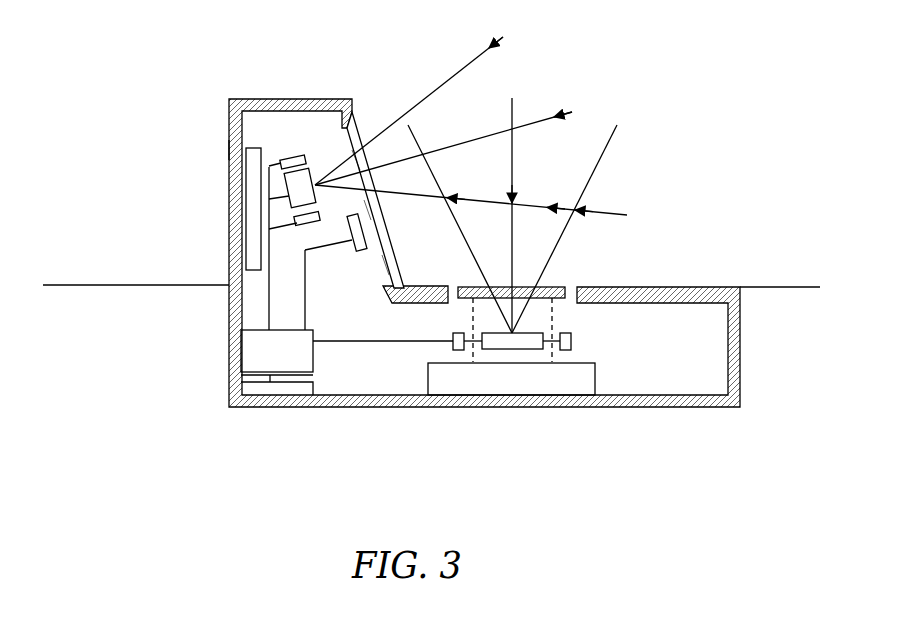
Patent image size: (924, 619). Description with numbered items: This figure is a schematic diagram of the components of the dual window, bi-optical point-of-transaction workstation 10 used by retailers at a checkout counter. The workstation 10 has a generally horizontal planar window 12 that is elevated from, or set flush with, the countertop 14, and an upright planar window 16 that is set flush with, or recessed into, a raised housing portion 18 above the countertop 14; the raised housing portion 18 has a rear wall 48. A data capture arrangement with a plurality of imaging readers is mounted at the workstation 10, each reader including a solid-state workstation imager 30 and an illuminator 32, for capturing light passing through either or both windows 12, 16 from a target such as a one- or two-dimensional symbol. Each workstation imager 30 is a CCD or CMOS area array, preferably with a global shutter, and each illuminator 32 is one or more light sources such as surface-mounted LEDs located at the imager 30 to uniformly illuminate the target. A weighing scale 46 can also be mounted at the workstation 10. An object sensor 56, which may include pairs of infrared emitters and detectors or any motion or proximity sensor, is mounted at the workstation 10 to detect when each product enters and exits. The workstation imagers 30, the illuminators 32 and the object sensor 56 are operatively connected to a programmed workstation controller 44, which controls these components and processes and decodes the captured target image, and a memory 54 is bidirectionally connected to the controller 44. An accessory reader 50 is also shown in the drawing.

The point-of-transaction workstation 10 is at (677, 238).
The horizontal planar window 12 is at (552, 282).
The countertop 14 is at (132, 285).
The upright planar window 16 is at (364, 129).
The raised housing portion 18 is at (289, 100).
The workstation imager 30 is at (555, 450).
The illuminator 32 is at (660, 420).
The workstation controller 44 is at (260, 358).
The weighing scale 46 is at (437, 377).
The rear wall 48 is at (230, 152).
The accessory reader 50 is at (252, 149).
The memory 54 is at (250, 388).
The object sensor 56 is at (360, 255).